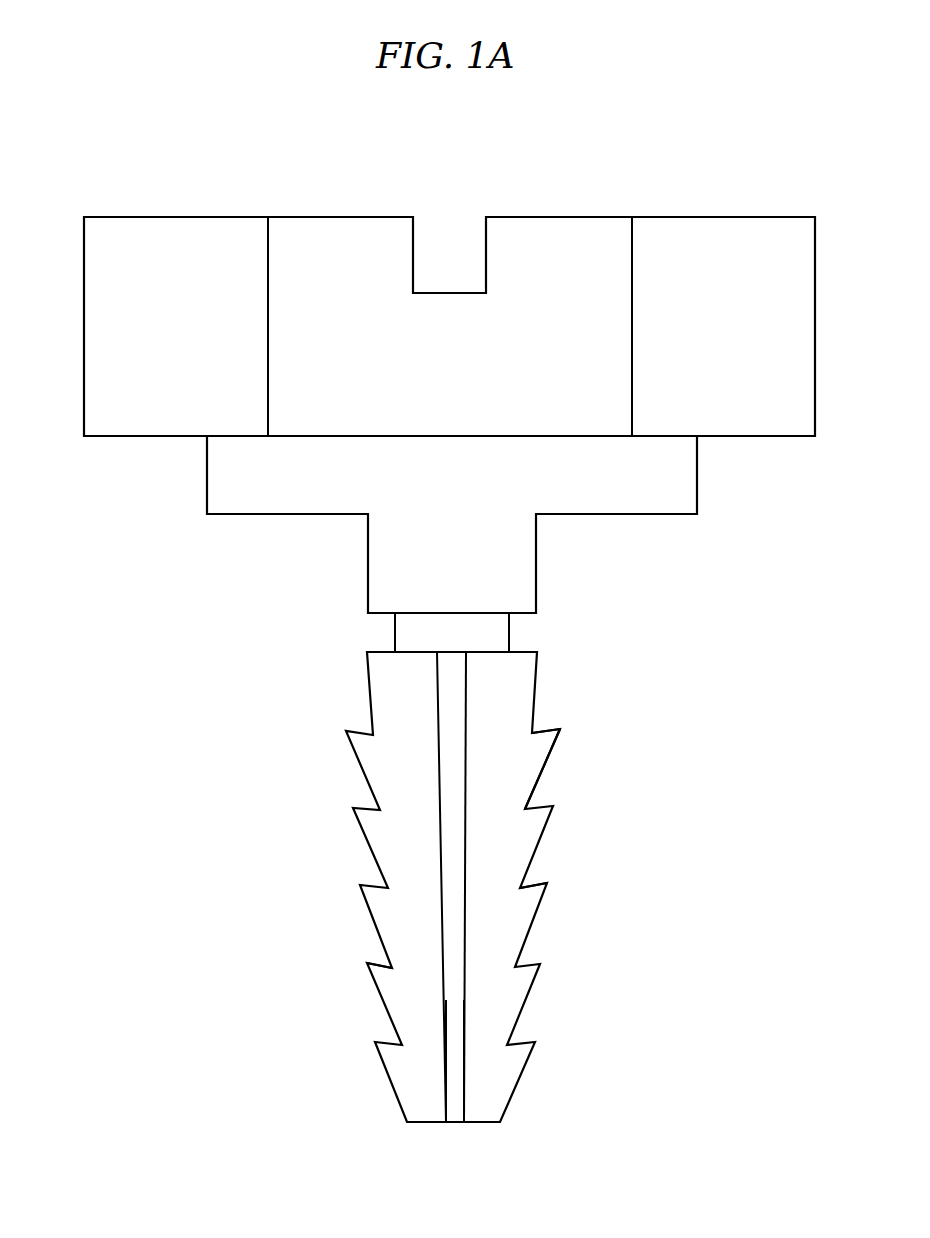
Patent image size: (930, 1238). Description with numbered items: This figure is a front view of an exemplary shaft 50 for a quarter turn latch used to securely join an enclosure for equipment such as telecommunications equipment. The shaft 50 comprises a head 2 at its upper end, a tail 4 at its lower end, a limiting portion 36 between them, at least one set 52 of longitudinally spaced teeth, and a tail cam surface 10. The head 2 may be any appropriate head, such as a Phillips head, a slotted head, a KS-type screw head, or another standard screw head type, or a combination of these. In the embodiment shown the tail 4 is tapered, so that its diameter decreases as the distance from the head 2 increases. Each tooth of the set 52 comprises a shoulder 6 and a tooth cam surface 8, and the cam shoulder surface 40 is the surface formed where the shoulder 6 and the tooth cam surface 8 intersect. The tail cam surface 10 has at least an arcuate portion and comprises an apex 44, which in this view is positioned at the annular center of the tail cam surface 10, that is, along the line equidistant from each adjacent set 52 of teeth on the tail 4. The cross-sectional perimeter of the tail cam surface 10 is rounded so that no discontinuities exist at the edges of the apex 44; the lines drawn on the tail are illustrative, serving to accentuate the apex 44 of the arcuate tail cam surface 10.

The shaft 50 is at (59, 158).
The head 2 is at (797, 254).
The limiting portion 36 is at (537, 563).
The tail 4 is at (288, 782).
The tail cam surface 10 is at (425, 852).
The shoulder 6 is at (548, 731).
The tooth cam surface 8 is at (545, 770).
The cam shoulder surface 40 is at (522, 887).
The apex 44 is at (455, 997).
The set of longitudinally spaced teeth 52 is at (359, 950).